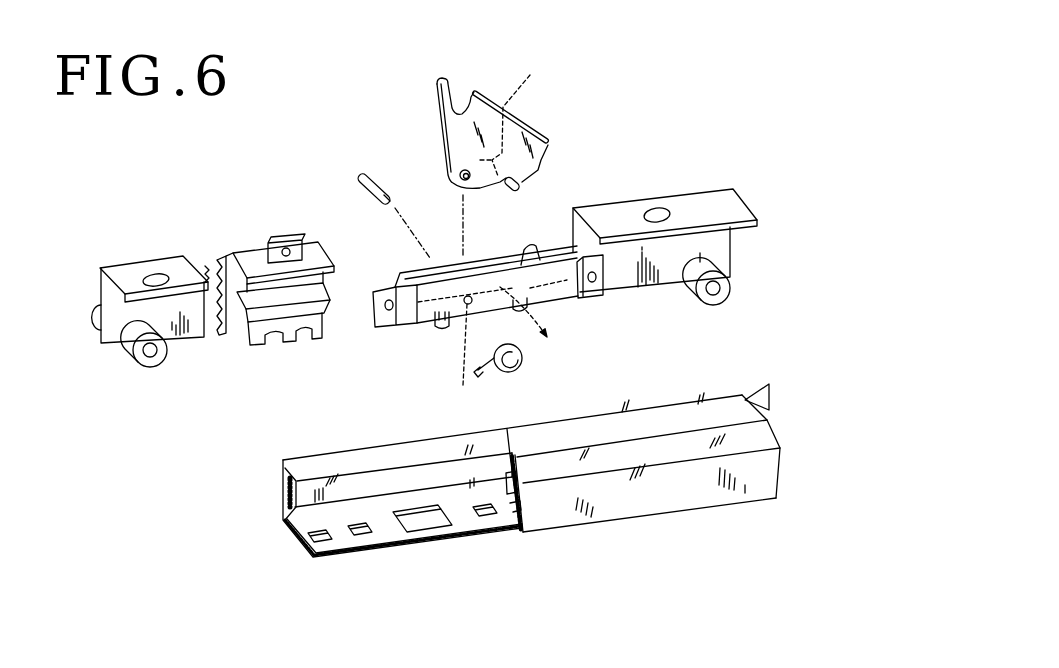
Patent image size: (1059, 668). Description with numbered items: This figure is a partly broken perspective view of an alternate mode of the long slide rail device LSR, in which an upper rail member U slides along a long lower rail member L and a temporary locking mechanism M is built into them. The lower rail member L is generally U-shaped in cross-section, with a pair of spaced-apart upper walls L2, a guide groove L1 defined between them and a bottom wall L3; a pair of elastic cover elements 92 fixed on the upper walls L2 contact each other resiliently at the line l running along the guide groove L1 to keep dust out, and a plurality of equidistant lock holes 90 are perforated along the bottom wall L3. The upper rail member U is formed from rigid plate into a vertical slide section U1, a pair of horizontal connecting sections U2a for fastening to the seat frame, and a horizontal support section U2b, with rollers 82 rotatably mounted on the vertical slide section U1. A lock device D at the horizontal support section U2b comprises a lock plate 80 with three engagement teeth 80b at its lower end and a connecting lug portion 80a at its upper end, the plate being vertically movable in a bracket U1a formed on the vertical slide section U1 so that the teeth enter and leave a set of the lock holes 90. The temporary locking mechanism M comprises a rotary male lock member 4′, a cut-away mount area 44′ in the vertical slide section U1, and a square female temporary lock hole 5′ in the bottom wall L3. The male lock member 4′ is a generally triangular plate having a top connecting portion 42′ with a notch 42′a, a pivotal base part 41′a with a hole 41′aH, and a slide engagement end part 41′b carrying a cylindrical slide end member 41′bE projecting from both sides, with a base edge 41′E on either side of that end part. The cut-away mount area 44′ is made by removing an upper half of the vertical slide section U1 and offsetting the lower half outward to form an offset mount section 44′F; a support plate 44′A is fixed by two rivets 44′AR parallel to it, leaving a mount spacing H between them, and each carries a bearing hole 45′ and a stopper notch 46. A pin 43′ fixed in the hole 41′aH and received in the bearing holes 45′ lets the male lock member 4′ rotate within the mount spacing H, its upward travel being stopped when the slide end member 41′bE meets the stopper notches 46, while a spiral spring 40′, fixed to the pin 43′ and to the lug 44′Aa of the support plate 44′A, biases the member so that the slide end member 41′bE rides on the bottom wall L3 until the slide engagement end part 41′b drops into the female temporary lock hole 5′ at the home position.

The temporary locking mechanism M is at (792, 97).
The linear slide rail LSR is at (836, 277).
The upper rail member U is at (757, 257).
The long lower rail member L is at (783, 457).
The vertical slide section U1 is at (733, 247).
The horizontal connecting sections U2a is at (130, 266).
The horizontal support section U2b is at (245, 252).
The bracket U1a is at (247, 318).
The rollers 82 is at (97, 320).
The lock plate 80 is at (272, 297).
The connecting lug portion 80a is at (279, 241).
The engagement teeth 80b is at (305, 342).
The lock device D is at (250, 208).
The pin 43′ is at (358, 175).
The pivotal base part 41′a is at (497, 130).
The hole 41′aH is at (457, 178).
The top connecting portion 42′ is at (487, 100).
The notch 42′a is at (452, 88).
The cylindrical slide end member 41′bE is at (562, 188).
The slide engagement end part 41′b is at (548, 150).
The base edge 41′E is at (553, 152).
The rotary male lock member 4′ is at (552, 115).
The mount spacing H is at (493, 273).
The cut-away mount area 44′ is at (509, 306).
The support plate 44′A is at (420, 327).
The rivets 44′AR is at (417, 325).
The lug 44′Aa is at (443, 327).
The offset mount section 44′F is at (536, 259).
The bearing holes 45′ is at (457, 356).
The stopper notches 46 is at (541, 324).
The spiral spring 40′ is at (515, 371).
The guide groove L1 is at (340, 490).
The upper walls L2 is at (285, 498).
The bottom wall L3 is at (502, 522).
The lock holes 90 is at (365, 537).
The female temporary lock hole 5′ is at (414, 533).
The elastic cover elements 92 is at (769, 392).
The line l is at (655, 434).